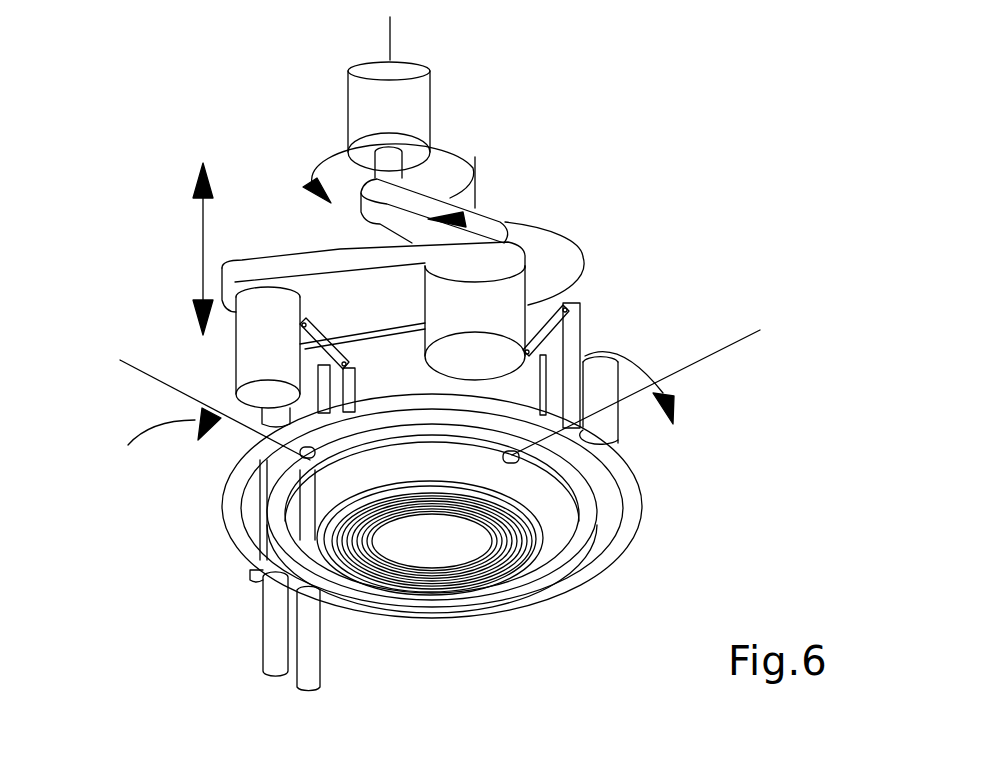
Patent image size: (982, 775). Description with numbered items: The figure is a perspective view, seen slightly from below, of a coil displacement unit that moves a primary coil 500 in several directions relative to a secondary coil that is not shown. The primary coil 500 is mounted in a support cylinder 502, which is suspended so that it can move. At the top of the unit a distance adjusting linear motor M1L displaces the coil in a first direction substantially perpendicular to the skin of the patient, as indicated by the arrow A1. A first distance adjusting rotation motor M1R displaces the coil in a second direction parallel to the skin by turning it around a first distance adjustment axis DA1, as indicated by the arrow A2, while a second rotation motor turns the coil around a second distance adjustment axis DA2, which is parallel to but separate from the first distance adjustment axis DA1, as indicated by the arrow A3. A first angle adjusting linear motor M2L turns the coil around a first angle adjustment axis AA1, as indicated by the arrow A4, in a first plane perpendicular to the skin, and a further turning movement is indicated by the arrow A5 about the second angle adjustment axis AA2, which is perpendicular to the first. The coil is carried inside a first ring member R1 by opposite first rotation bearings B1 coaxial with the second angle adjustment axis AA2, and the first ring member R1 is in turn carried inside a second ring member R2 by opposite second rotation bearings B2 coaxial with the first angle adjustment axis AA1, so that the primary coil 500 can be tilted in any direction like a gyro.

The first distance adjustment axis DA1 is at (429, 31).
The first distance adjusting rotation motor M1R is at (432, 85).
The arrow A2 is at (447, 140).
The second distance adjustment axis DA2 is at (487, 192).
The arrow A3 is at (580, 258).
The arrow A1 is at (203, 250).
The distance adjusting linear motor M1L is at (237, 355).
The first angle adjustment axis AA1 is at (194, 410).
The arrow A4 is at (160, 444).
The second angle adjustment axis AA2 is at (636, 387).
The arrow A5 is at (663, 387).
The first angle adjusting linear motor M2L is at (618, 423).
The first ring member R1 is at (590, 513).
The second ring member R2 is at (608, 562).
The first rotation bearings B1 is at (503, 457).
The second rotation bearings B2 is at (313, 452).
The primary coil 500 is at (433, 565).
The support cylinder 502 is at (518, 563).